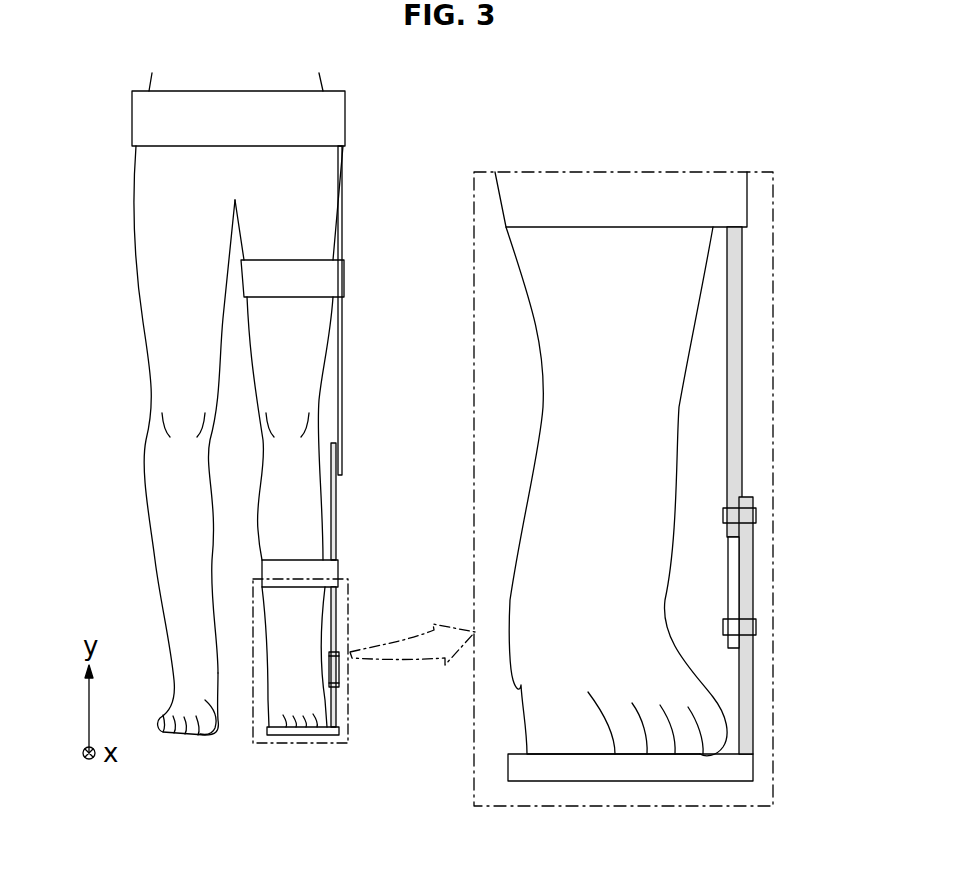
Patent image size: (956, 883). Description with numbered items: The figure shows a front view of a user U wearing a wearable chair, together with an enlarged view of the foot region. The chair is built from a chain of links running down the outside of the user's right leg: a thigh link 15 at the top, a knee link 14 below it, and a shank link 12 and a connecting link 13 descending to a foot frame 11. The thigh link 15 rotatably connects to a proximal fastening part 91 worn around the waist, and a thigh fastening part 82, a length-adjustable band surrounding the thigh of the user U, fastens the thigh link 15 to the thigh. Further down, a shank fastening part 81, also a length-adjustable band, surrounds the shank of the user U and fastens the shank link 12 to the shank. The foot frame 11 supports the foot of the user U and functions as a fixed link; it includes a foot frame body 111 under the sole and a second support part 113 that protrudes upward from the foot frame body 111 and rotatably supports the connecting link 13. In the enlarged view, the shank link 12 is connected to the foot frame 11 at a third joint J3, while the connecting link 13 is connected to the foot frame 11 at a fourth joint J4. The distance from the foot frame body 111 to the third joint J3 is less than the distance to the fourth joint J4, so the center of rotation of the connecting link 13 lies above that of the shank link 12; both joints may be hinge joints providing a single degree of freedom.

The proximal fastening part 91 is at (132, 118).
The user U is at (131, 250).
The thigh fastening part 82 is at (320, 265).
The thigh link 15 is at (342, 340).
The knee link 14 is at (337, 458).
The shank fastening part 81 is at (338, 572).
The connecting link 13 is at (336, 620).
The foot frame 11 is at (338, 706).
The foot frame body 111 is at (650, 776).
The second support part 113 is at (750, 573).
The shank link 12 is at (733, 597).
The fourth joint J4 is at (757, 514).
The third joint J3 is at (757, 625).